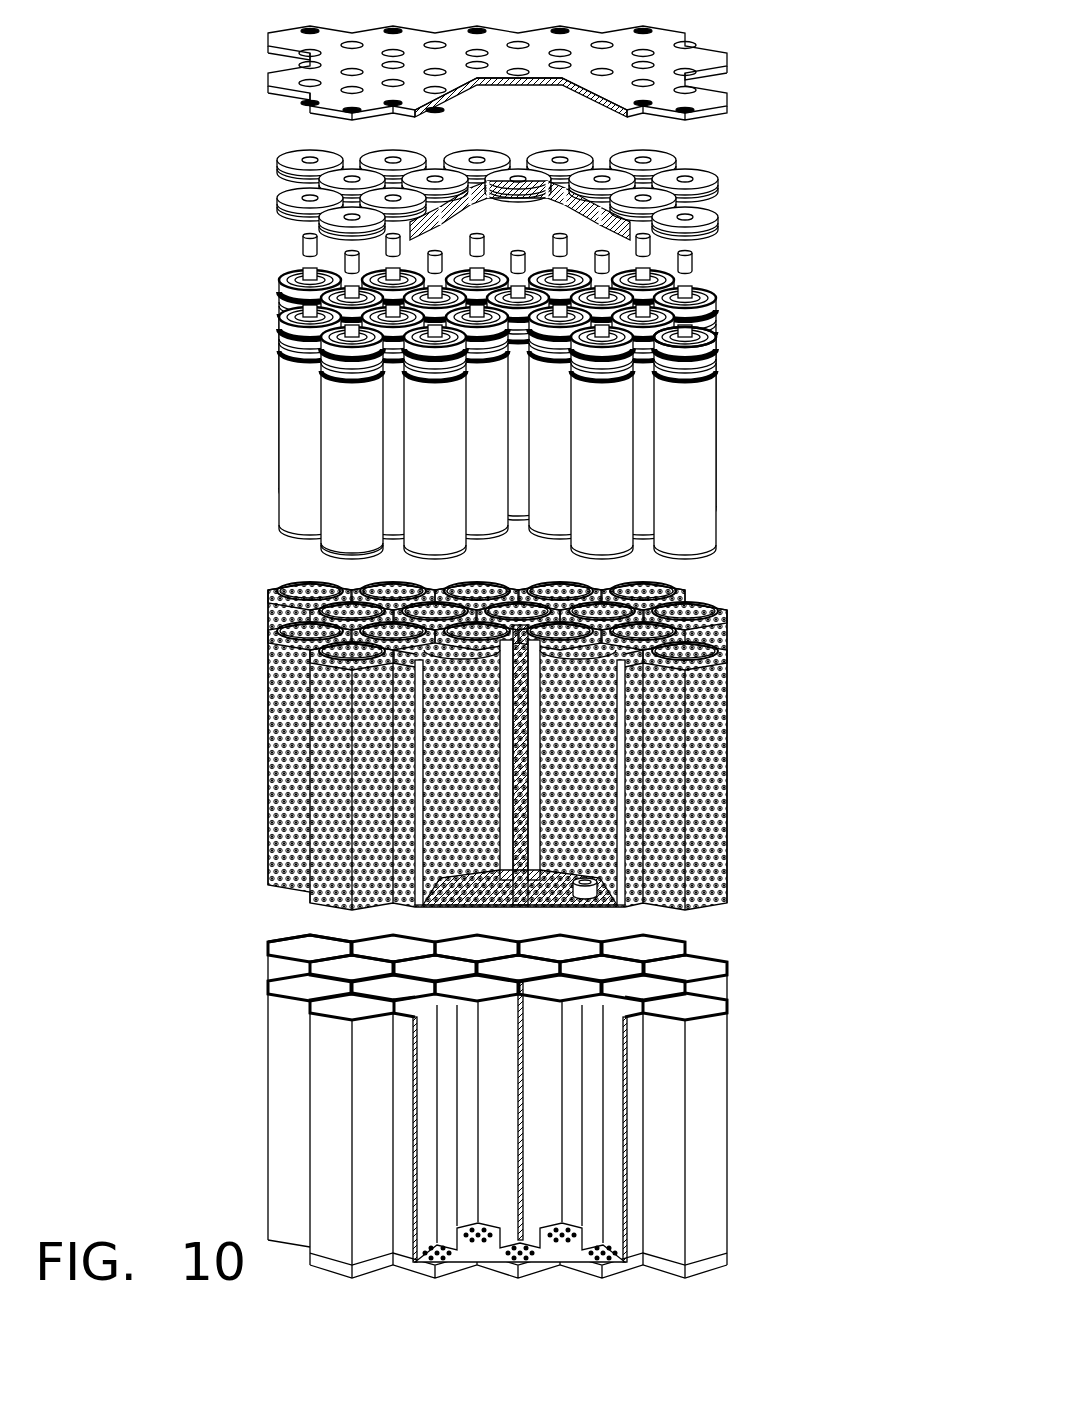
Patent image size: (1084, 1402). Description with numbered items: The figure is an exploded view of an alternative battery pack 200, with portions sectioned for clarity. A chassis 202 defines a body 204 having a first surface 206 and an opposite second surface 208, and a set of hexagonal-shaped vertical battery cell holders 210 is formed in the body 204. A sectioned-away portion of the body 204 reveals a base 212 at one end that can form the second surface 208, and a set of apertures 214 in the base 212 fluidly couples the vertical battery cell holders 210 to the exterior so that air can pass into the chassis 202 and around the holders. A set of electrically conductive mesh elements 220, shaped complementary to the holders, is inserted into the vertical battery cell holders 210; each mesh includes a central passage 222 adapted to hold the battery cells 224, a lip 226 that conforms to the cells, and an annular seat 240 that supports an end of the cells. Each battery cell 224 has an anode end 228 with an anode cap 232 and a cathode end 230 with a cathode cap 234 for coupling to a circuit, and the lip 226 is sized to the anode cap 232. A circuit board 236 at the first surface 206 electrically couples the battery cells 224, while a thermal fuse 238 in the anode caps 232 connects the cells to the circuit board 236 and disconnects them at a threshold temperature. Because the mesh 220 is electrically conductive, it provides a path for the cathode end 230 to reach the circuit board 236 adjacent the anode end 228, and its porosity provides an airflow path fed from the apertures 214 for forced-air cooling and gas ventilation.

The battery pack 200 is at (177, 47).
The chassis 202 is at (502, 1088).
The body 204 is at (718, 1134).
The first surface 206 is at (712, 956).
The second surface 208 is at (718, 1262).
The vertical battery cell holders 210 is at (291, 947).
The base 212 is at (285, 1250).
The apertures 214 is at (575, 1265).
The electrically conductive mesh elements 220 is at (501, 736).
The central passage 222 is at (293, 586).
The battery cells 224 is at (722, 407).
The lip 226 is at (425, 680).
The anode end 228 is at (717, 330).
The cathode end 230 is at (353, 550).
The anode cap 232 is at (292, 160).
The cathode cap 234 is at (597, 898).
The circuit board 236 is at (703, 55).
The thermal fuse 238 is at (300, 243).
The annular seat 240 is at (445, 875).